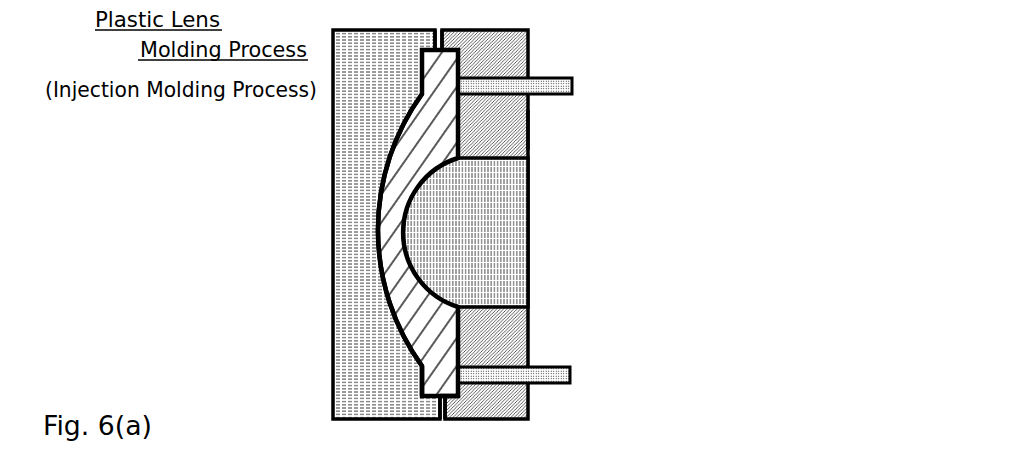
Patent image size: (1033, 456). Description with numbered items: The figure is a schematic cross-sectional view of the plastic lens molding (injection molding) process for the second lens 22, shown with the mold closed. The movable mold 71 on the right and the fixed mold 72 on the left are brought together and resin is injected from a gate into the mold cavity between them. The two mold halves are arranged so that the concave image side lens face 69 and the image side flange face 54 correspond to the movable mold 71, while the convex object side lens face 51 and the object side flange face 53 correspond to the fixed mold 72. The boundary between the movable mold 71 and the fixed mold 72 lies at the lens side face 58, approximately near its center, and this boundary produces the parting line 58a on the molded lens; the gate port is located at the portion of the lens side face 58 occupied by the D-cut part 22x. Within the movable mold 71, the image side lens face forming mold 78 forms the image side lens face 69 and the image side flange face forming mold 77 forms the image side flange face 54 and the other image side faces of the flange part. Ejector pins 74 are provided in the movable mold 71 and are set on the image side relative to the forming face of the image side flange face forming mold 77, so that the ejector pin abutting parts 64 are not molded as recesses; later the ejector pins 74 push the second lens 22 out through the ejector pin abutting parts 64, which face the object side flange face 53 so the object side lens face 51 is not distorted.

The second lens 22 is at (403, 160).
The "D"-cut part 22x is at (448, 398).
The object side lens face 51 is at (380, 246).
The object side flange face 53 is at (420, 378).
The image side flange face 54 is at (460, 147).
The lens side face 58 is at (435, 50).
The parting line 58a is at (436, 48).
The ejector pin abutting part 64 is at (480, 88).
The image side lens face 69 is at (420, 278).
The movable mold 71 is at (581, 201).
The fixed mold 72 is at (307, 201).
The ejector pin 74 is at (553, 78).
The image side flange face forming mold 77 is at (530, 128).
The image side lens face forming mold 78 is at (530, 253).